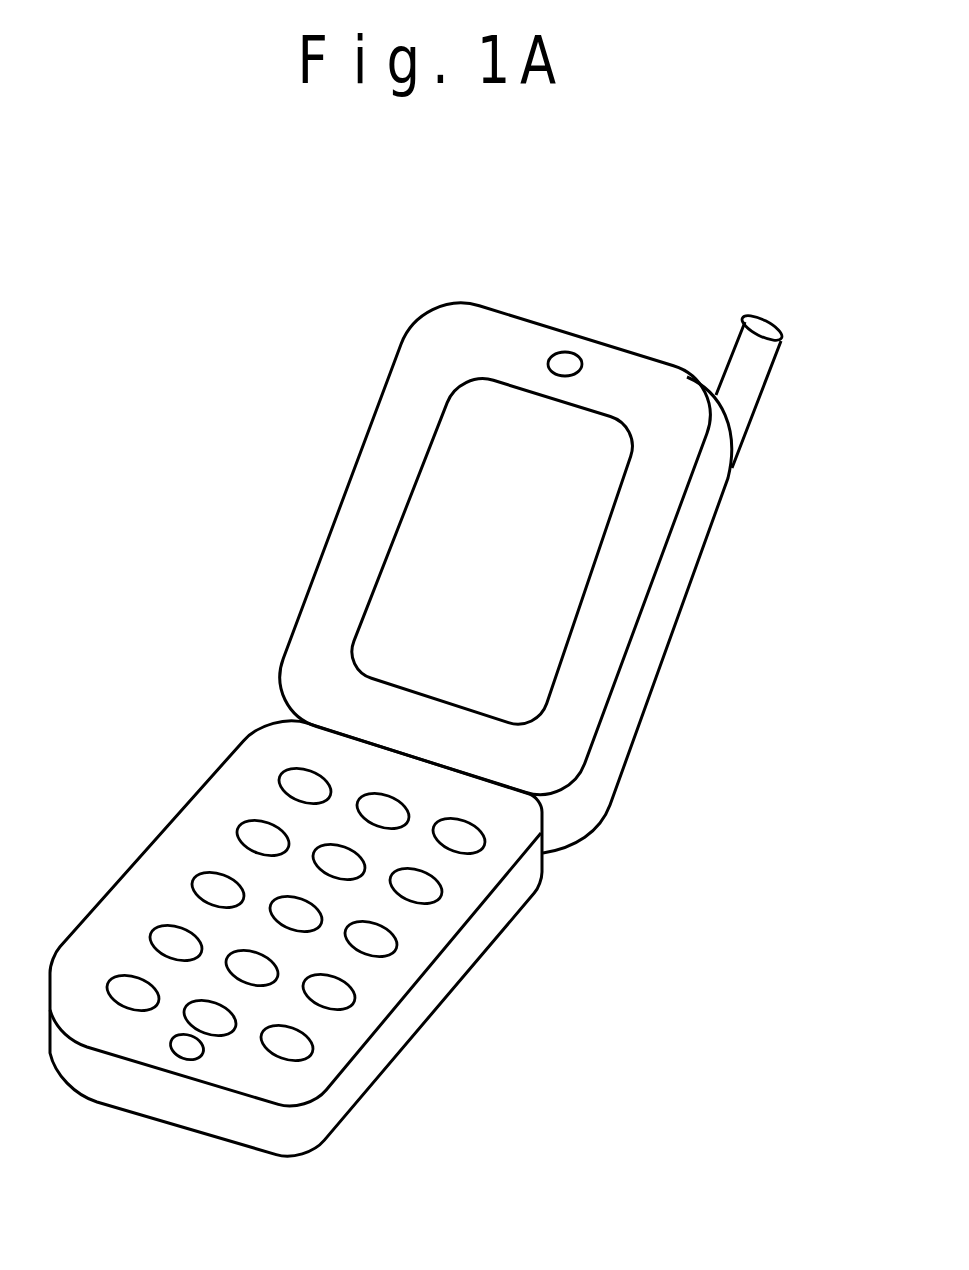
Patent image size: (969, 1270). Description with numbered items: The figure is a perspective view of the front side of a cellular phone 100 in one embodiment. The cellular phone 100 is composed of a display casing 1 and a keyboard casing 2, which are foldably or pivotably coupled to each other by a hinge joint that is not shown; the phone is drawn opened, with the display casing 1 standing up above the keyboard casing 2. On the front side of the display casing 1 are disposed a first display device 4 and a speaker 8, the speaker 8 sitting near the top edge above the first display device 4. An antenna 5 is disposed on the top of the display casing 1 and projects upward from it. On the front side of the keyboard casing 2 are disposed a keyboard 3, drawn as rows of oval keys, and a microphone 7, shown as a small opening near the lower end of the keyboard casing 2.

The cellular phone 100 is at (178, 462).
The display casing 1 is at (364, 490).
The keyboard casing 2 is at (147, 880).
The keyboard 3 is at (213, 812).
The first display device 4 is at (537, 567).
The antenna 5 is at (757, 377).
The microphone 7 is at (185, 1048).
The speaker 8 is at (566, 362).